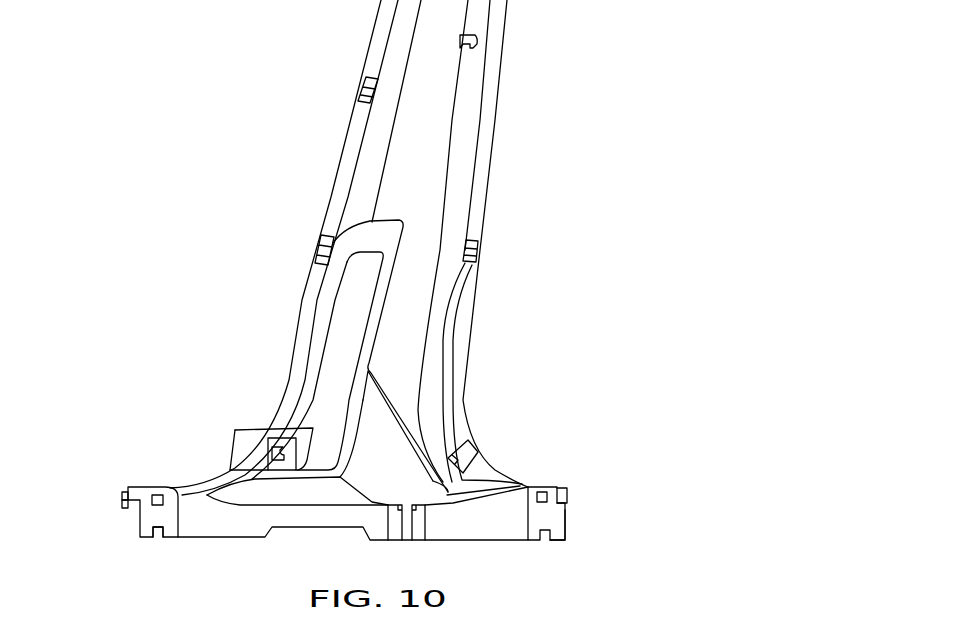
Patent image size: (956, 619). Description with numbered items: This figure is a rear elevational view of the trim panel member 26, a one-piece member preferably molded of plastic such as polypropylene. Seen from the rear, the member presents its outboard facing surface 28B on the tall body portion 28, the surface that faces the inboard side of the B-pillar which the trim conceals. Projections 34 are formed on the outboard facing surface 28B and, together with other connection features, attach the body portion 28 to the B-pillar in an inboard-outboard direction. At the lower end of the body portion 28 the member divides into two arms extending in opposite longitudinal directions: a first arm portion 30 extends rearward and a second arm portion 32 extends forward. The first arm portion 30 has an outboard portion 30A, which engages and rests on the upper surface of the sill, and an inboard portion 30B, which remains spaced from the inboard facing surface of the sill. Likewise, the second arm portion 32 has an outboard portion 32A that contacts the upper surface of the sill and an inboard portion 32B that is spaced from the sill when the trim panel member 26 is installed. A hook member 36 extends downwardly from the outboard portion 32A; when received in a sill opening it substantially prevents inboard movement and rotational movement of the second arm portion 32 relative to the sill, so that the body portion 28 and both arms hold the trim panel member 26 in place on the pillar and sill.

The trim panel member 26 is at (262, 153).
The body portion 28 is at (502, 80).
The outboard facing surface 28B is at (425, 133).
The first arm portion 30 is at (541, 487).
The outboard portion 30A is at (566, 490).
The inboard portion 30B is at (567, 532).
The second arm portion 32 is at (142, 487).
The outboard portion 32A is at (122, 494).
The inboard portion 32B is at (170, 528).
The projections 34 is at (361, 105).
The hook member 36 is at (124, 509).